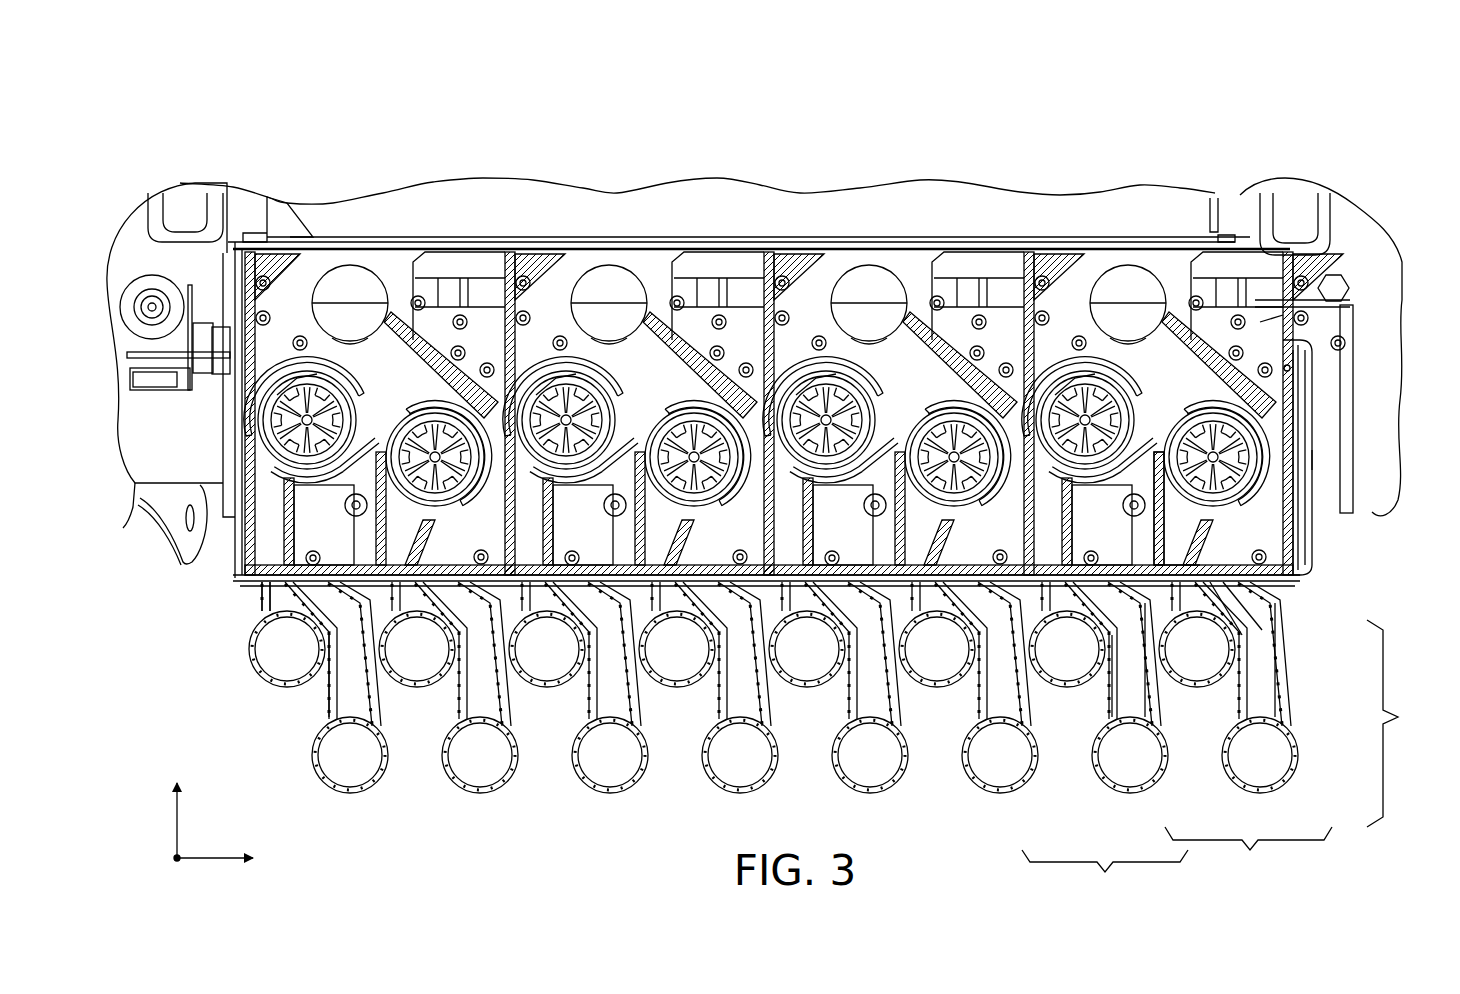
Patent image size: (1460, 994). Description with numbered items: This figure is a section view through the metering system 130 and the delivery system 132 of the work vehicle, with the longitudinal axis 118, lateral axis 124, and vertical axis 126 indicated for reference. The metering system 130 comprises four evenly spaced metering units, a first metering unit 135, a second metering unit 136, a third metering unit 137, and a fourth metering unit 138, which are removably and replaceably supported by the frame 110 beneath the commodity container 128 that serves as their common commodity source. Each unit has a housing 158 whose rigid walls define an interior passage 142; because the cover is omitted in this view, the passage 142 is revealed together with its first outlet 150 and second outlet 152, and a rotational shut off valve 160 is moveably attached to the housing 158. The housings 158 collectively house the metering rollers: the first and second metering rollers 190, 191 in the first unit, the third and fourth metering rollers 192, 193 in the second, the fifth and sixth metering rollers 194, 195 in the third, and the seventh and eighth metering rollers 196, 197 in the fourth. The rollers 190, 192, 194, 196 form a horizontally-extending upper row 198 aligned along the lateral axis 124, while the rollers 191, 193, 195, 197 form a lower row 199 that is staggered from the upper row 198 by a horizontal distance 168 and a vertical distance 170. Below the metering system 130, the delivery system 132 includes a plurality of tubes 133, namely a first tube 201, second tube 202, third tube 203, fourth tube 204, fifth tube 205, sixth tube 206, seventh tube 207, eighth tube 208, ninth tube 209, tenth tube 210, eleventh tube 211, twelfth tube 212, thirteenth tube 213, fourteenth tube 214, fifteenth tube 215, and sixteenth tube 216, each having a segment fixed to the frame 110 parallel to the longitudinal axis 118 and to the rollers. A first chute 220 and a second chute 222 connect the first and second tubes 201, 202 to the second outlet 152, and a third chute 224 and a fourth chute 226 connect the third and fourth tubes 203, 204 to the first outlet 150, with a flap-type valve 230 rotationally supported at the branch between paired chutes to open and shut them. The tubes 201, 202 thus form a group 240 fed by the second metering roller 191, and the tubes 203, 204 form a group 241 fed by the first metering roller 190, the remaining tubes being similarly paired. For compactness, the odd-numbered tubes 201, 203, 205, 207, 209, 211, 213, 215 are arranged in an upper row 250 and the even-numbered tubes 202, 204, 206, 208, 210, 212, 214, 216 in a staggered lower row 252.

The frame 110 is at (1362, 243).
The longitudinal axis 118 is at (177, 858).
The lateral axis 124 is at (207, 858).
The vertical axis 126 is at (177, 830).
The commodity container 128 is at (393, 213).
The metering system 130 is at (262, 343).
The delivery system 132 is at (238, 703).
The plurality of tubes 133 is at (1402, 723).
The first metering unit 135 is at (1300, 390).
The second metering unit 136 is at (1000, 355).
The third metering unit 137 is at (740, 365).
The fourth metering unit 138 is at (480, 355).
The interior passage 142 is at (1197, 367).
The first outlet 150 is at (1140, 285).
The second outlet 152 is at (1213, 457).
The housing 158 is at (1300, 425).
The shut off valve 160 is at (1062, 372).
The horizontal distance 168 is at (1178, 562).
The vertical distance 170 is at (1152, 414).
The first metering roller 190 is at (1090, 440).
The second metering roller 191 is at (1222, 432).
The third metering roller 192 is at (846, 407).
The fourth metering roller 193 is at (962, 443).
The fifth metering roller 194 is at (586, 407).
The sixth metering roller 195 is at (702, 443).
The seventh metering roller 196 is at (327, 407).
The eighth metering roller 197 is at (443, 443).
The upper row 198 is at (217, 432).
The lower row 199 is at (1295, 458).
The first tube 201 is at (1225, 654).
The second tube 202 is at (1260, 755).
The third tube 203 is at (1095, 654).
The fourth tube 204 is at (1130, 755).
The fifth tube 205 is at (965, 654).
The sixth tube 206 is at (1000, 755).
The seventh tube 207 is at (835, 654).
The eighth tube 208 is at (870, 755).
The ninth tube 209 is at (705, 654).
The tenth tube 210 is at (740, 755).
The eleventh tube 211 is at (575, 654).
The twelfth tube 212 is at (610, 755).
The thirteenth tube 213 is at (445, 654).
The fourteenth tube 214 is at (480, 755).
The fifteenth tube 215 is at (315, 654).
The sixteenth tube 216 is at (350, 755).
The first chute 220 is at (1213, 603).
The second chute 222 is at (1267, 683).
The third chute 224 is at (1097, 760).
The fourth chute 226 is at (1130, 685).
The valve 230 is at (1218, 612).
The group 240 is at (1248, 859).
The group 241 is at (1105, 879).
The upper row 250 is at (225, 618).
The lower row 252 is at (280, 758).